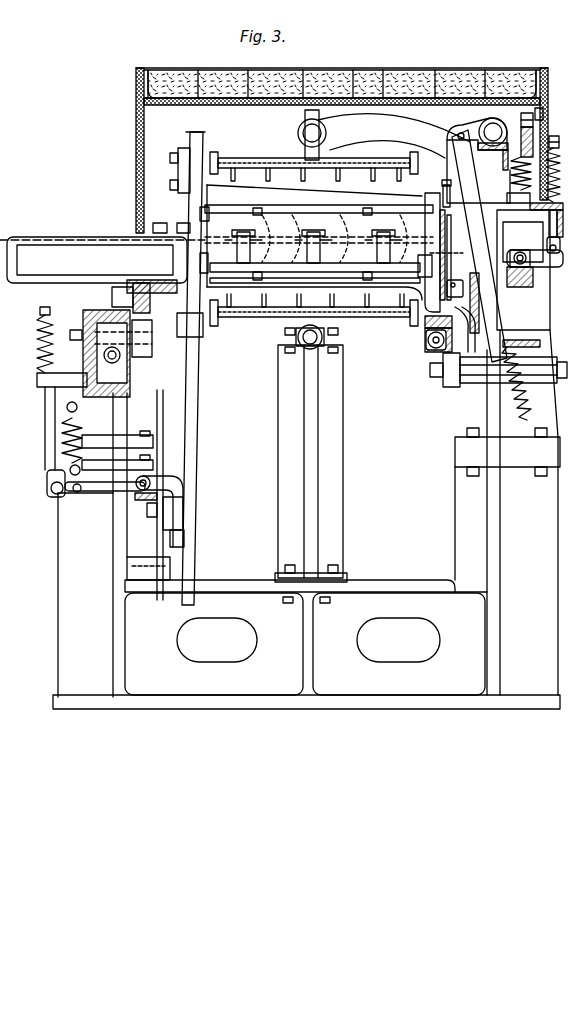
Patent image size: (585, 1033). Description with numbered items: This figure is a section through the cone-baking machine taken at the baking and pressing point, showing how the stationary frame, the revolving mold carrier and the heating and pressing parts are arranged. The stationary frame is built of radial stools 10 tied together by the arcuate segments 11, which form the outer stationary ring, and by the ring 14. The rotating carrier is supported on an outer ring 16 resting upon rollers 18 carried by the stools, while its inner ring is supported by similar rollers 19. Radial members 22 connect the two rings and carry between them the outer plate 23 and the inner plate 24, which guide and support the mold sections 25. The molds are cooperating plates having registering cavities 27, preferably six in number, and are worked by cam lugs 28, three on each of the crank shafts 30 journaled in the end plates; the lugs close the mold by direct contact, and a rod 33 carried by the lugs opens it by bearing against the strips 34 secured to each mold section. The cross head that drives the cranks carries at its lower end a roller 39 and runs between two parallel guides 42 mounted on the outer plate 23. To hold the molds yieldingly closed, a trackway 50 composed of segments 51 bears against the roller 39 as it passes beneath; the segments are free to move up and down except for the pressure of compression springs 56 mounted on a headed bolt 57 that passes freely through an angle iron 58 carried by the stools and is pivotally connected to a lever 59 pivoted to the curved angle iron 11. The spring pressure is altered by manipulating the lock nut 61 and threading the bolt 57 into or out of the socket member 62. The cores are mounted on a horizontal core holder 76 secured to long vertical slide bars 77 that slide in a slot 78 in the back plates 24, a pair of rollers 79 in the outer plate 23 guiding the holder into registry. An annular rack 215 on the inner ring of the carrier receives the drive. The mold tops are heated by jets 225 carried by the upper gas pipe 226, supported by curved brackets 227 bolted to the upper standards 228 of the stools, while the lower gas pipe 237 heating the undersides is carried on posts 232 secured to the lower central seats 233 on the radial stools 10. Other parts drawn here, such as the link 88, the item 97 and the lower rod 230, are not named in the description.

The radial stool 10 is at (306, 529).
The arcuate segment 11 is at (537, 285).
The ring 14 is at (92, 312).
The outer ring 16 is at (425, 330).
The roller 18 is at (444, 388).
The roller 19 is at (148, 332).
The radial member 22 is at (140, 237).
The outer plate 23 is at (446, 232).
The inner plate 24 is at (200, 214).
The mold section 25 is at (398, 210).
The registering cavity 27 is at (330, 172).
The cam lug 28 is at (243, 232).
The crank shaft 30 is at (342, 283).
The rod 33 is at (319, 231).
The strip 34 is at (252, 272).
The roller 39 is at (452, 336).
The parallel guide 42 is at (449, 248).
The trackway 50 is at (465, 286).
The segment 51 is at (185, 515).
The spring 56 is at (558, 168).
The headed bolt 57 is at (541, 120).
The angle iron 58 is at (552, 204).
The lever 59 is at (533, 262).
The lock nut 61 is at (559, 142).
The socket member 62 is at (560, 247).
The core holder 76 is at (428, 196).
The vertical slide bar 77 is at (192, 133).
The slot 78 is at (178, 151).
The roller 79 is at (449, 208).
The link 88 is at (450, 193).
The hopper 97 is at (275, 132).
The annular rack 215 is at (122, 287).
The jet 225 is at (356, 178).
The upper gas pipe 226 is at (298, 134).
The curved bracket 227 is at (398, 131).
The upper standard 228 is at (545, 325).
The rod 230 is at (263, 321).
The post 232 is at (330, 438).
The lower central seat 233 is at (348, 585).
The lower gas pipe 237 is at (322, 347).